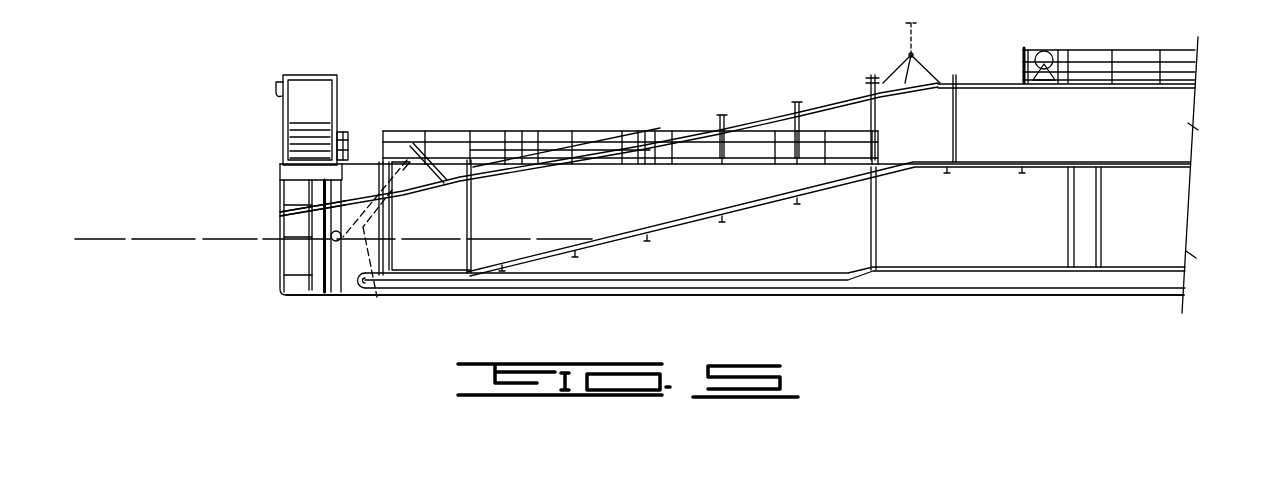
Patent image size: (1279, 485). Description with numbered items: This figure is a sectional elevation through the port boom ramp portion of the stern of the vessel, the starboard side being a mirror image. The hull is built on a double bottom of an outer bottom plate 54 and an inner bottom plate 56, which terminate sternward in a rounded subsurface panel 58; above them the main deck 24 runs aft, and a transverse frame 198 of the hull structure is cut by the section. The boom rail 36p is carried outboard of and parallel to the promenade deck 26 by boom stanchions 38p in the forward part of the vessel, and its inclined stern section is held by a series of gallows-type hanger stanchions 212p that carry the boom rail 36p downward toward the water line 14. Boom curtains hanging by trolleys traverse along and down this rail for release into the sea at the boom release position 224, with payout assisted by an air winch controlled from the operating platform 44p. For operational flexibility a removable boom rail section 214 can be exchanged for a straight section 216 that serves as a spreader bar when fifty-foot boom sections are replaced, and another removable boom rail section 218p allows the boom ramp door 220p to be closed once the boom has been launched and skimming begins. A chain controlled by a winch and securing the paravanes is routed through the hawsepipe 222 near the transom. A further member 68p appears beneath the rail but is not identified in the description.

The water line 14 is at (140, 242).
The main deck 24 is at (358, 158).
The promenade deck 26 is at (1123, 82).
The boom rail 36p is at (593, 148).
The boom stanchion 38p is at (960, 127).
The operating platform 44p is at (305, 122).
The outer bottom plate 54 is at (747, 295).
The inner bottom plate 56 is at (642, 273).
The rounded subsurface panel 58 is at (347, 293).
The lower rail 68p is at (705, 212).
The transverse frame 198 is at (877, 218).
The gallows-type hanger stanchion 212p is at (722, 115).
The removable boom rail section 214 is at (887, 83).
The straight section 216 is at (917, 55).
The removable boom rail section 218p is at (432, 160).
The boom ramp door 220p is at (446, 226).
The hawsepipe 222 is at (377, 297).
The boom release position 224 is at (280, 213).